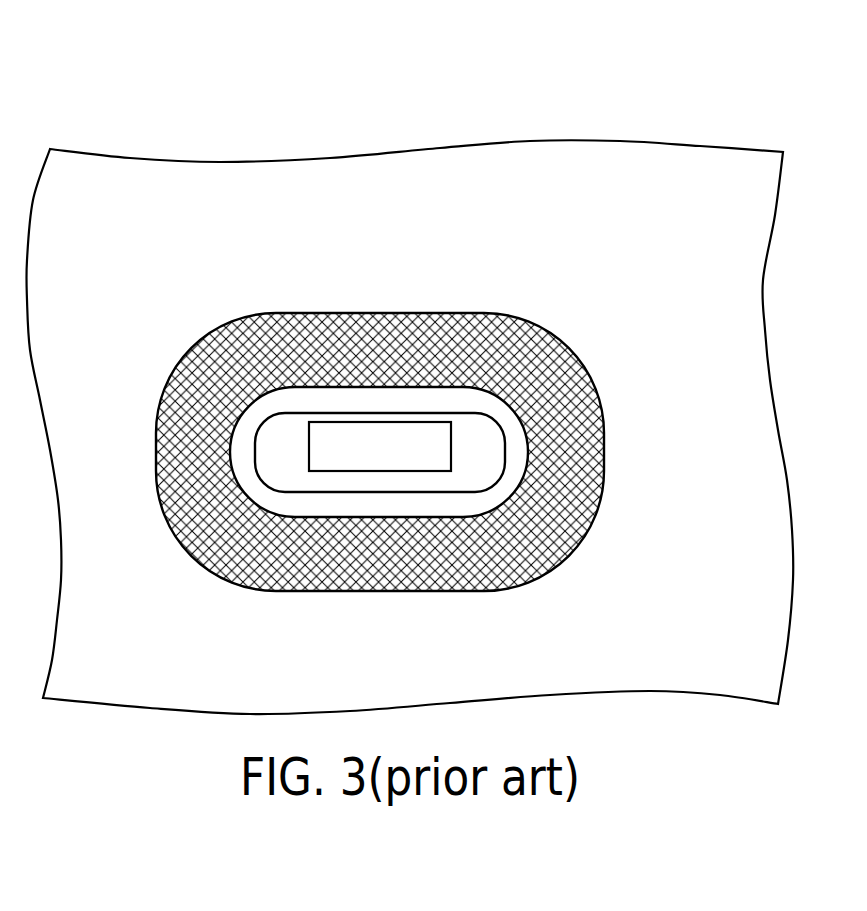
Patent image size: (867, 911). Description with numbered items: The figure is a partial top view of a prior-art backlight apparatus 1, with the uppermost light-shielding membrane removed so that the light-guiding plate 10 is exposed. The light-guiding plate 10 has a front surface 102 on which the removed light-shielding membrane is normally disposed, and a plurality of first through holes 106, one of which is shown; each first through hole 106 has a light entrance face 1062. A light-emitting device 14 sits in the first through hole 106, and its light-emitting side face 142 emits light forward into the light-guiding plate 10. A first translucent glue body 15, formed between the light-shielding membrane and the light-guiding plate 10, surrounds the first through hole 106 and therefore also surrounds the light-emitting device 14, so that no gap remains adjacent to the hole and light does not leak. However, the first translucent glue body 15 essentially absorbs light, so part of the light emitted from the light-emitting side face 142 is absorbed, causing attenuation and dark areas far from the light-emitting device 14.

The backlight apparatus 1 is at (361, 74).
The light-guiding plate 10 is at (442, 185).
The front surface 102 is at (701, 216).
The first translucent glue body 15 is at (223, 383).
The first through hole 106 is at (485, 437).
The light entrance face 1062 is at (427, 413).
The light-emitting device 14 is at (377, 448).
The light-emitting side face 142 is at (405, 423).